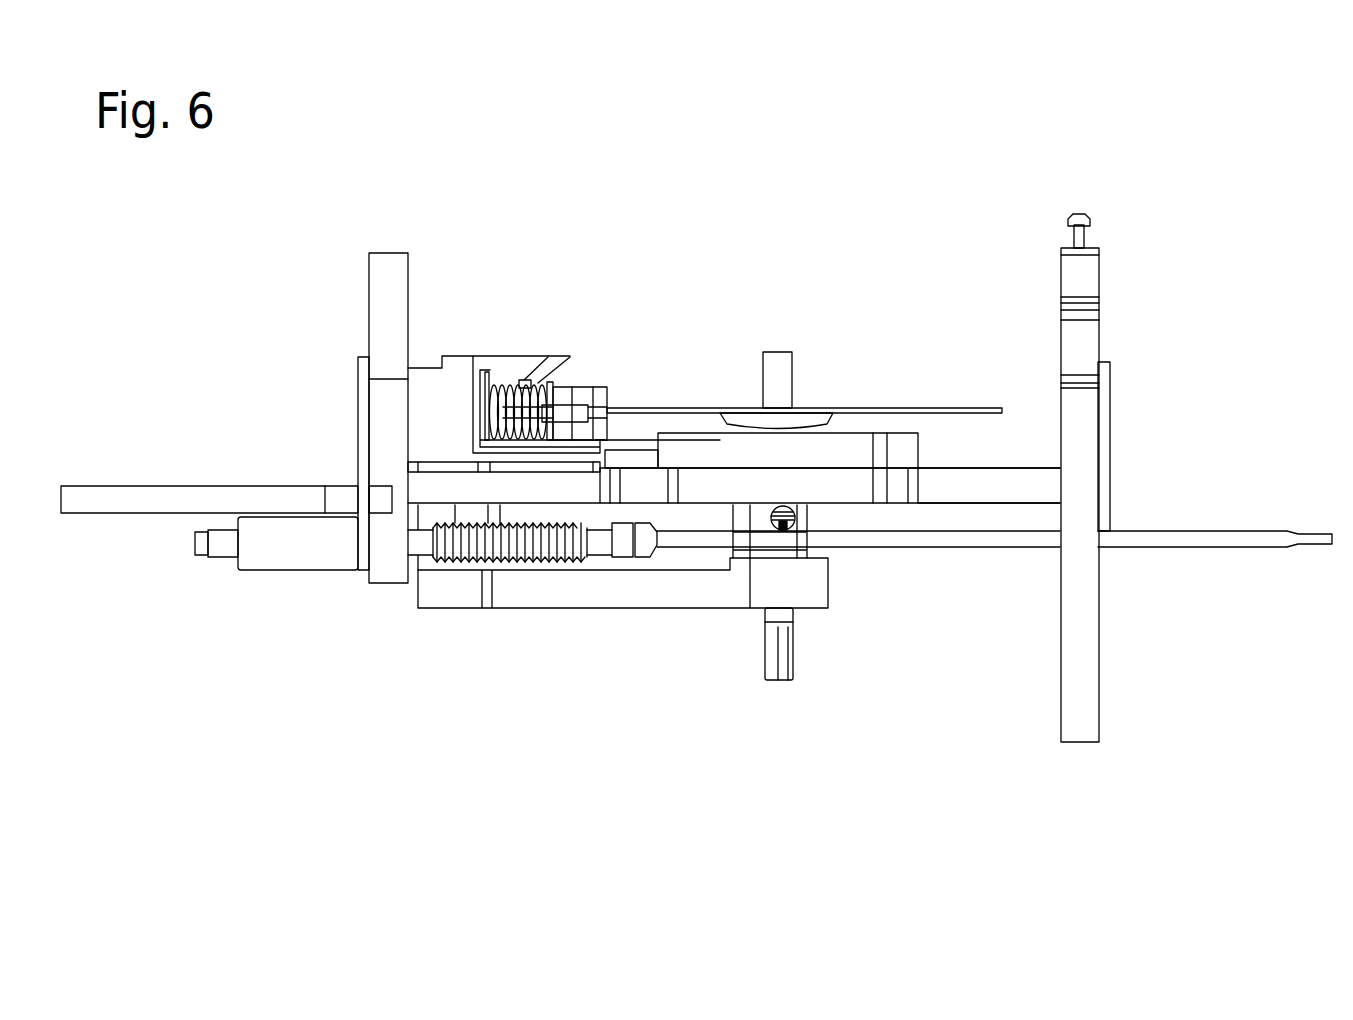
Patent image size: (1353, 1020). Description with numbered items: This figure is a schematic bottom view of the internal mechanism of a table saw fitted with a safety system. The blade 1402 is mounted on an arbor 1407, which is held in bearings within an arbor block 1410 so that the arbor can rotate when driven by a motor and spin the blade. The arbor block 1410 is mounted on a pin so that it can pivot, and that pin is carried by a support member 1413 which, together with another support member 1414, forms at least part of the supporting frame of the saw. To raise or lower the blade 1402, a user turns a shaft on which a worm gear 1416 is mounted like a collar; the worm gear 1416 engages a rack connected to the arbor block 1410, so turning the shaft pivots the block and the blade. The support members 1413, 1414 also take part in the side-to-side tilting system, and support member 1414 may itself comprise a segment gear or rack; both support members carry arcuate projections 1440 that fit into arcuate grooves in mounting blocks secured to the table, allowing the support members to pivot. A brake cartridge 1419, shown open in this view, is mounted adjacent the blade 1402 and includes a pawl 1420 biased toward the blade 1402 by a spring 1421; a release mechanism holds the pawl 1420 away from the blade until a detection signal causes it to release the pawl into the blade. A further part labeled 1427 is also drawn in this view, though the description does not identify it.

The blade 1402 is at (865, 405).
The arbor 1407 is at (778, 360).
The arbor block 1410 is at (657, 590).
The support member 1413 is at (386, 265).
The support member 1414 is at (1077, 727).
The worm gear 1416 is at (518, 548).
The brake cartridge 1419 is at (477, 358).
The pawl 1420 is at (607, 395).
The spring 1421 is at (503, 383).
The support block 1427 is at (1033, 475).
The arcuate projections 1440 is at (357, 423).